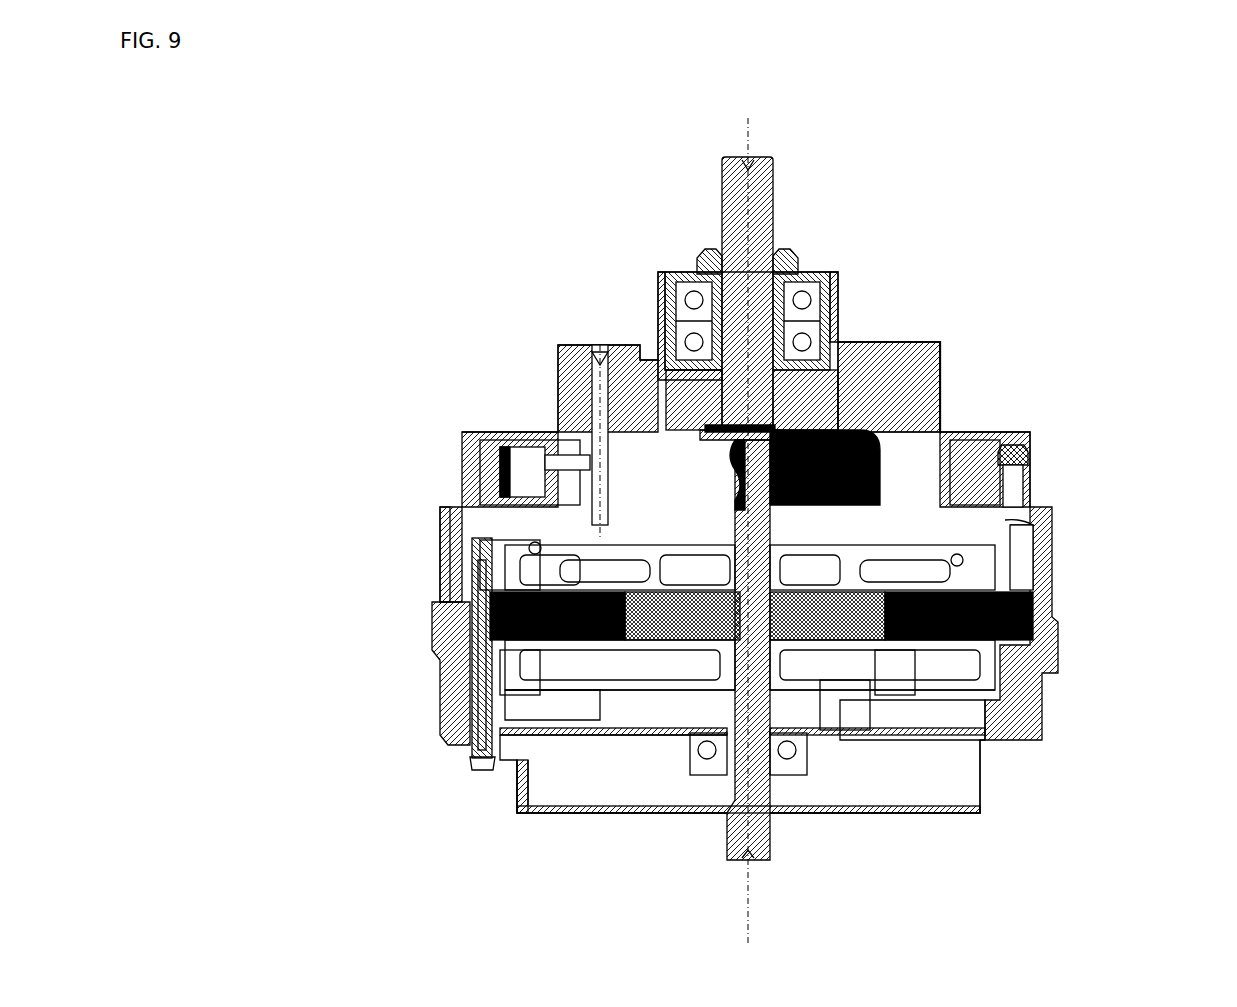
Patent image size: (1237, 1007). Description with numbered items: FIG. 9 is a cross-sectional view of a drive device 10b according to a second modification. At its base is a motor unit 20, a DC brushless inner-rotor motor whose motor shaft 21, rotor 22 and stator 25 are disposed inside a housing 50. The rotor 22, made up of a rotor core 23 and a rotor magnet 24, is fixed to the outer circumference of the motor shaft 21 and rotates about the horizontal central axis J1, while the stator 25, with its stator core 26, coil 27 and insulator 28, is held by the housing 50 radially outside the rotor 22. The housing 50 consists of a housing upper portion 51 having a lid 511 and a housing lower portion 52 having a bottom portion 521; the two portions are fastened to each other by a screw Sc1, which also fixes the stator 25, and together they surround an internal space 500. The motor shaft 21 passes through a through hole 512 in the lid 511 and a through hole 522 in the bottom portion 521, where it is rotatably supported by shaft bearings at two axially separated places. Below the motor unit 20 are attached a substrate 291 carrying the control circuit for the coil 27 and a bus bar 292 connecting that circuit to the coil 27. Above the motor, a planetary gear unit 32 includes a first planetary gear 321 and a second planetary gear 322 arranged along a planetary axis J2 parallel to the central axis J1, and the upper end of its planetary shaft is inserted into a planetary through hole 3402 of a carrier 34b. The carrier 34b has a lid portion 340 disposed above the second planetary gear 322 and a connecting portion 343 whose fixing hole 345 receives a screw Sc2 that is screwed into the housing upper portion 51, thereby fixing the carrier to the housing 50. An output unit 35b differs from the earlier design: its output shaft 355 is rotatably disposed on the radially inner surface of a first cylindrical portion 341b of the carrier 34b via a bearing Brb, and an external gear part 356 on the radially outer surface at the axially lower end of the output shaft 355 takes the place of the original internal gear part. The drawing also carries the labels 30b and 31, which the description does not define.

The drive device 10b is at (222, 224).
The central axis J1 is at (752, 128).
The planetary axis J2 is at (595, 350).
The output unit 35b is at (716, 228).
The output shaft 355 is at (773, 202).
The external gear part 356 is at (835, 370).
The bearing Brb is at (805, 282).
The first cylindrical portion 341b is at (665, 290).
The lid portion 340 is at (870, 380).
The rotor 30b is at (952, 305).
The carrier 34b is at (885, 395).
The rotor magnet 31 is at (790, 415).
The planetary through hole 3402 is at (600, 350).
The second planetary gear 322 is at (590, 400).
The planetary gear unit 32 is at (585, 408).
The first planetary gear 321 is at (490, 495).
The connecting portion 343 is at (940, 440).
The fixing hole 345 is at (1010, 455).
The screw Sc2 is at (1010, 488).
The lid 511 is at (1010, 535).
The housing upper portion 51 is at (1035, 560).
The internal space 500 is at (1020, 582).
The housing 50 is at (1058, 664).
The housing lower portion 52 is at (1015, 690).
The through hole 512 is at (470, 540).
The motor unit 20 is at (452, 602).
The screw Sc1 is at (460, 690).
The stator core 26 is at (470, 700).
The insulator 28 is at (490, 740).
The stator 25 is at (520, 720).
The coil 27 is at (540, 720).
The rotor 22 is at (625, 740).
The motor shaft 21 is at (720, 810).
The bottom portion 521 is at (630, 790).
The through hole 522 is at (748, 855).
The rotor core 23 is at (800, 760).
The rotor magnet 24 is at (855, 720).
The substrate 291 is at (905, 720).
The bus bar 292 is at (970, 720).